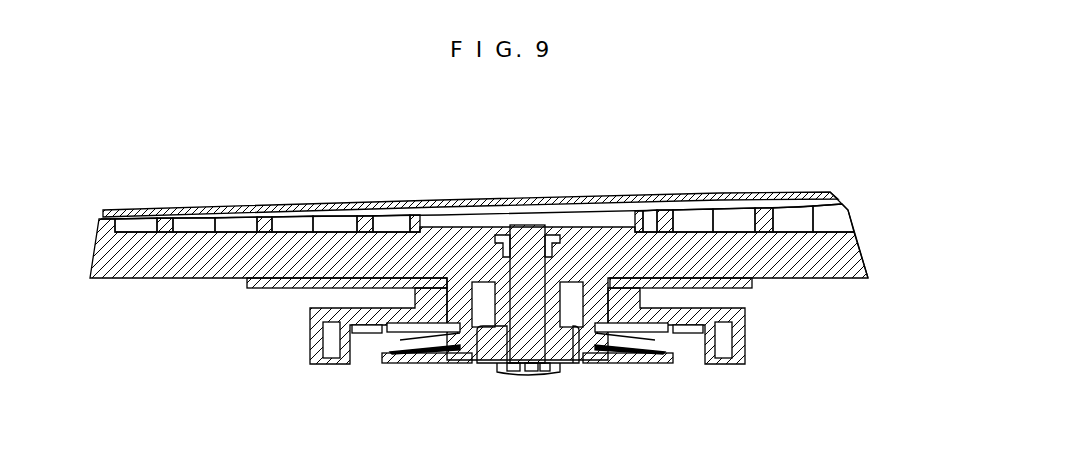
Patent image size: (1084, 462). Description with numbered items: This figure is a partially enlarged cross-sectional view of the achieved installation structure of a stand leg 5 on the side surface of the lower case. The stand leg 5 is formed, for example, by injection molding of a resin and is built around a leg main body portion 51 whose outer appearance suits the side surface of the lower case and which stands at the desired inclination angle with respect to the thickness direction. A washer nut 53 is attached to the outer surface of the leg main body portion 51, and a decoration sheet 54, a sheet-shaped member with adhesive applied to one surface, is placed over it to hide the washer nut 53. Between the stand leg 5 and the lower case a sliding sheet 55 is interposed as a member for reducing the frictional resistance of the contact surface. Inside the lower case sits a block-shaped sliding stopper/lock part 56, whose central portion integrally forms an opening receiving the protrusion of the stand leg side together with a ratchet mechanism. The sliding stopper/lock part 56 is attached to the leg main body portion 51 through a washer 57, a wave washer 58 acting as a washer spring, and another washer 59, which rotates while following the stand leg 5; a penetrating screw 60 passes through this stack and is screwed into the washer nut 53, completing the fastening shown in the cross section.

The stand leg 5 is at (880, 190).
The leg main body portion 51 is at (390, 257).
The washer nut 53 is at (600, 232).
The decoration sheet 54 is at (507, 201).
The sliding sheet 55 is at (275, 289).
The sliding stopper/lock part 56 is at (745, 335).
The washer 57 is at (397, 332).
The wave washer 58 is at (433, 348).
The washer 59 is at (617, 344).
The penetrating screw 60 is at (524, 350).